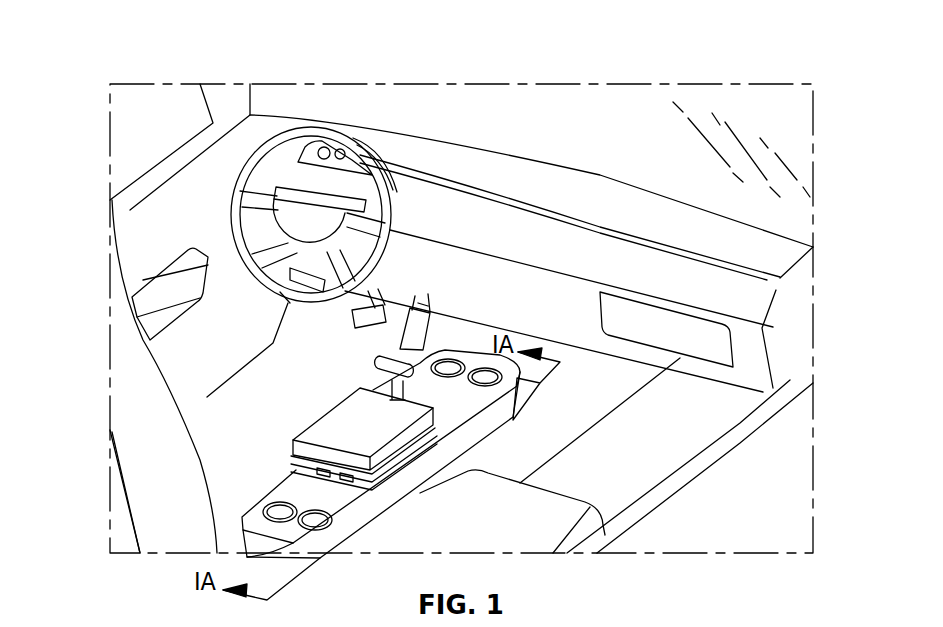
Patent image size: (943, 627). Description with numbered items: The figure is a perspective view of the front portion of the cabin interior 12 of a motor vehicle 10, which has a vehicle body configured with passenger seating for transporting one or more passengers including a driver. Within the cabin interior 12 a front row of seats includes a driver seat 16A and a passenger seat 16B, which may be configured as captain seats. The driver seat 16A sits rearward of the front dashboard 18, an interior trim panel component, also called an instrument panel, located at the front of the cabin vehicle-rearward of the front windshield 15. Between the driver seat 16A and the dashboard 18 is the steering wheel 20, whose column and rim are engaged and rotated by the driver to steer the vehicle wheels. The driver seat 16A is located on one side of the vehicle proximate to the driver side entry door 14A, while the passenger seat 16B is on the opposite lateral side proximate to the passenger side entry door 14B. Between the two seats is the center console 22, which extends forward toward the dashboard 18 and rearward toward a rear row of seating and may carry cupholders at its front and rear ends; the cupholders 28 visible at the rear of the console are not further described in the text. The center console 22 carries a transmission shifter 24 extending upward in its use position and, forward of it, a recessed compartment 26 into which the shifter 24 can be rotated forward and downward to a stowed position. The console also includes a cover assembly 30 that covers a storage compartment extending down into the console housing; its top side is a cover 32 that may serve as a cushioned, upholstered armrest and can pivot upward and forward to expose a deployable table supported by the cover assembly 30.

The motor vehicle 10 is at (137, 72).
The cabin interior 12 is at (187, 380).
The driver side entry door 14A is at (200, 142).
The passenger side entry door 14B is at (760, 413).
The front windshield 15 is at (731, 121).
The driver seat 16A is at (220, 473).
The passenger seat 16B is at (560, 523).
The front dashboard 18 is at (563, 187).
The steering wheel 20 is at (233, 200).
The center console 22 is at (453, 350).
The transmission shifter 24 is at (378, 365).
The recessed compartment 26 is at (417, 383).
The rear cup holders 28 is at (247, 517).
The cover assembly 30 is at (297, 437).
The cover 32 is at (332, 428).